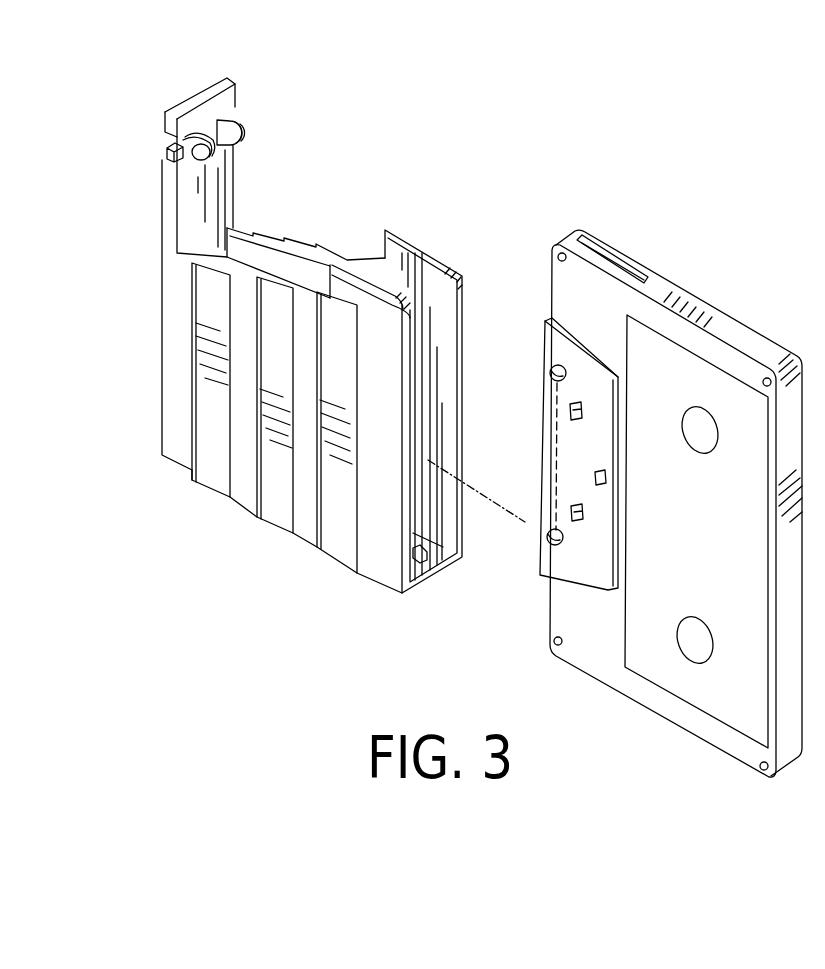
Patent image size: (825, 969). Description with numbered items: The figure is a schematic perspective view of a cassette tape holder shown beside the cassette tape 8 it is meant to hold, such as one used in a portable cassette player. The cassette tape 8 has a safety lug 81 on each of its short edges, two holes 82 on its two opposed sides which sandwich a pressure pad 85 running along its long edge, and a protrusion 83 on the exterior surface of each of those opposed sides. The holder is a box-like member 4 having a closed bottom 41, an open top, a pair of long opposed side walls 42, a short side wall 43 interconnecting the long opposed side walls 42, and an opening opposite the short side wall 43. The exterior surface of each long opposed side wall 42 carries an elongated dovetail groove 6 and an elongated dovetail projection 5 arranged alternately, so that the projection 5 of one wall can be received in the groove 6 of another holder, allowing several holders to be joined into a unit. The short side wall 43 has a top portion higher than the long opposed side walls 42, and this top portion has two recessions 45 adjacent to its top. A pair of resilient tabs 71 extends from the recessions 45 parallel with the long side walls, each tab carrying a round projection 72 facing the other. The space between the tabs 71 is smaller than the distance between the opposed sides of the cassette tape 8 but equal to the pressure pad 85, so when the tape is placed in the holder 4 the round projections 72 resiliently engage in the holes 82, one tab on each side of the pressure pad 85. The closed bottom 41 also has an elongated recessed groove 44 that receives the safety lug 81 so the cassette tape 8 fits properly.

The box-like member 4 is at (162, 318).
The elongated dovetail projection 5 is at (260, 538).
The elongated dovetail groove 6 is at (282, 222).
The cassette tape 8 is at (732, 327).
The closed bottom 41 is at (437, 555).
The long opposed side walls 42 is at (170, 418).
The short side wall 43 is at (203, 107).
The recessed groove 44 is at (416, 562).
The recessions 45 is at (168, 145).
The resilient tabs 71 is at (233, 123).
The round projection 72 is at (200, 158).
The safety lug 81 is at (614, 258).
The holes 82 is at (552, 376).
The protrusion 83 is at (548, 348).
The pressure pad 85 is at (558, 427).